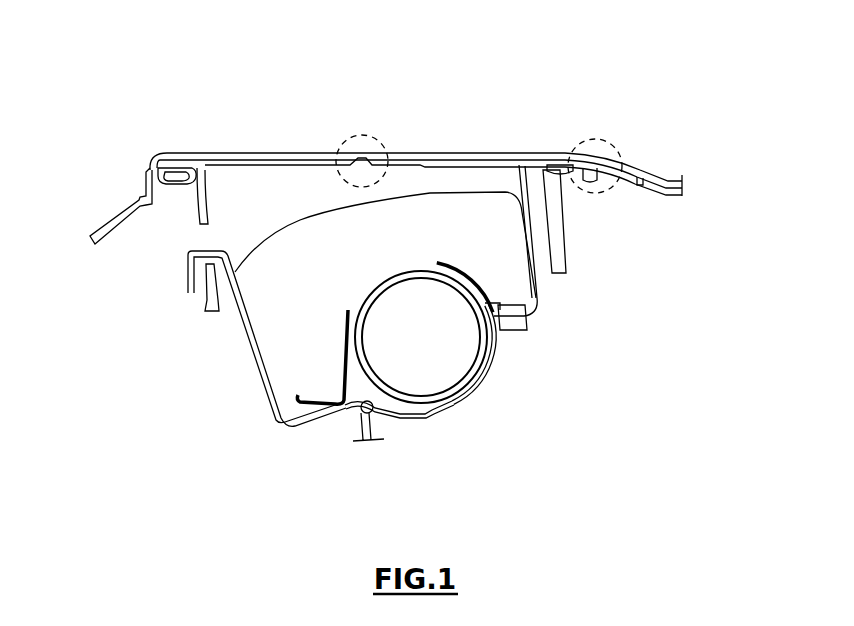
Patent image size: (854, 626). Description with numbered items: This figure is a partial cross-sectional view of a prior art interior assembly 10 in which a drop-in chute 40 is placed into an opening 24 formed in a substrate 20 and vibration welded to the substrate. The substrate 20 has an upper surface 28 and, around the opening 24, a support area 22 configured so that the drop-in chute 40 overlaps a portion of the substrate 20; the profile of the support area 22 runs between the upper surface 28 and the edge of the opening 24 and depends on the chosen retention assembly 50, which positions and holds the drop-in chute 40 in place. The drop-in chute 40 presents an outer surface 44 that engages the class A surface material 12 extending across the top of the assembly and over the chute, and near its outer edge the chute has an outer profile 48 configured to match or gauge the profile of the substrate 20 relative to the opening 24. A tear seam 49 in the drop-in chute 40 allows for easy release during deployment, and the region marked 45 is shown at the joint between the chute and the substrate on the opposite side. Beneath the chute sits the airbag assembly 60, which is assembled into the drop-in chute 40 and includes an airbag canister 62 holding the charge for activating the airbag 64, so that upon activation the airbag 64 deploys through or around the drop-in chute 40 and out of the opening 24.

The interior assembly 10 is at (180, 367).
The class A surface material 12 is at (238, 150).
The substrate 20 is at (650, 193).
The support area 22 is at (560, 185).
The opening 24 is at (437, 243).
The upper surface 28 is at (640, 165).
The drop-in chute 40 is at (293, 170).
The outer surface 44 is at (298, 150).
The joint region 45 is at (592, 140).
The outer profile 48 is at (138, 150).
The tear seam 49 is at (364, 136).
The drop-in chute retention assembly 50 is at (172, 189).
The airbag assembly 60 is at (498, 385).
The airbag canister 62 is at (397, 352).
The airbag 64 is at (308, 308).